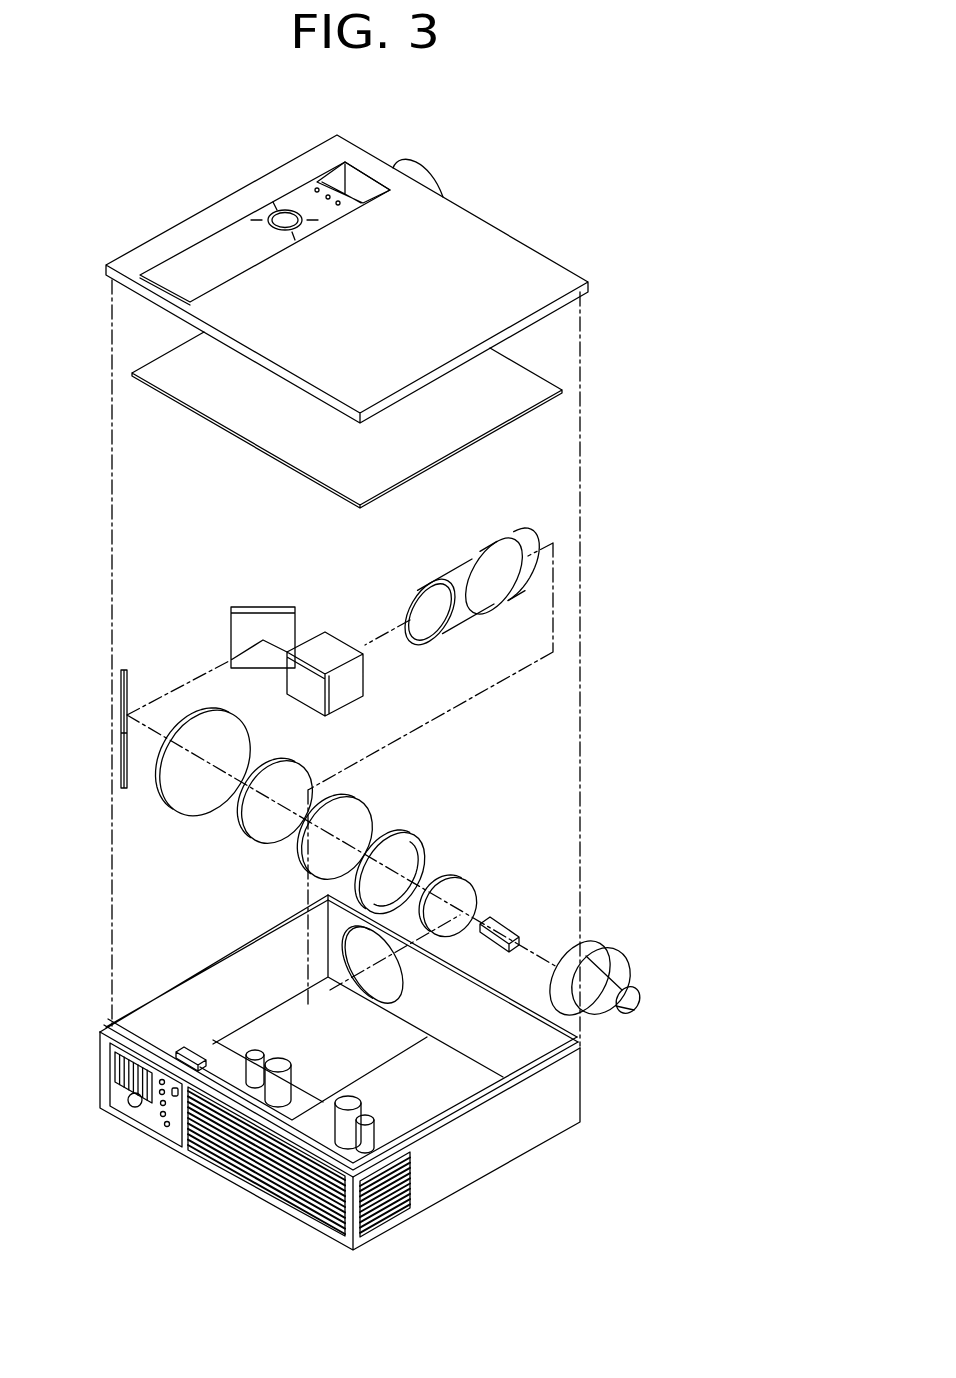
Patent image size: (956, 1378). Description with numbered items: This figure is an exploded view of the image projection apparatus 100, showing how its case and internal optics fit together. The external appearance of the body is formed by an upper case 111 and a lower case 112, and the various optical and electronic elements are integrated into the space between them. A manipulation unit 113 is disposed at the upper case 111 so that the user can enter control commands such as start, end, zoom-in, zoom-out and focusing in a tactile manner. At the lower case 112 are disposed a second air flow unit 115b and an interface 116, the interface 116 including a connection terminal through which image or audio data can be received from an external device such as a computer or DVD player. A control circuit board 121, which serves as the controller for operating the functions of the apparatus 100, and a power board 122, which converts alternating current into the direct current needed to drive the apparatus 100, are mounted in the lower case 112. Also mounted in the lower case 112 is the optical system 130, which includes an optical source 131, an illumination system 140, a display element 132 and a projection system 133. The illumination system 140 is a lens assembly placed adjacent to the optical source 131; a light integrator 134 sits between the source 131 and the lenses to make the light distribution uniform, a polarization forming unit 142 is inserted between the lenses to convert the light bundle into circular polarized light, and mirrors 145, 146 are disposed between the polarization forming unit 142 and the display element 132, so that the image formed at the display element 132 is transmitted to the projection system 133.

The image projection apparatus 100 is at (565, 173).
The upper case 111 is at (353, 269).
The lower case 112 is at (344, 1072).
The manipulation unit 113 is at (305, 200).
The second air flow unit 115b is at (258, 1180).
The interface 116 is at (160, 1113).
The control circuit board 121 is at (252, 432).
The power board 122 is at (255, 1097).
The optical system 130 is at (655, 615).
The optical source 131 is at (598, 940).
The display element 132 is at (312, 688).
The projection system 133 is at (462, 627).
The light integrator 134 is at (520, 913).
The illumination system 140 is at (345, 755).
The polarization forming unit 142 is at (357, 813).
The mirror 145 is at (127, 706).
The mirror 146 is at (265, 607).